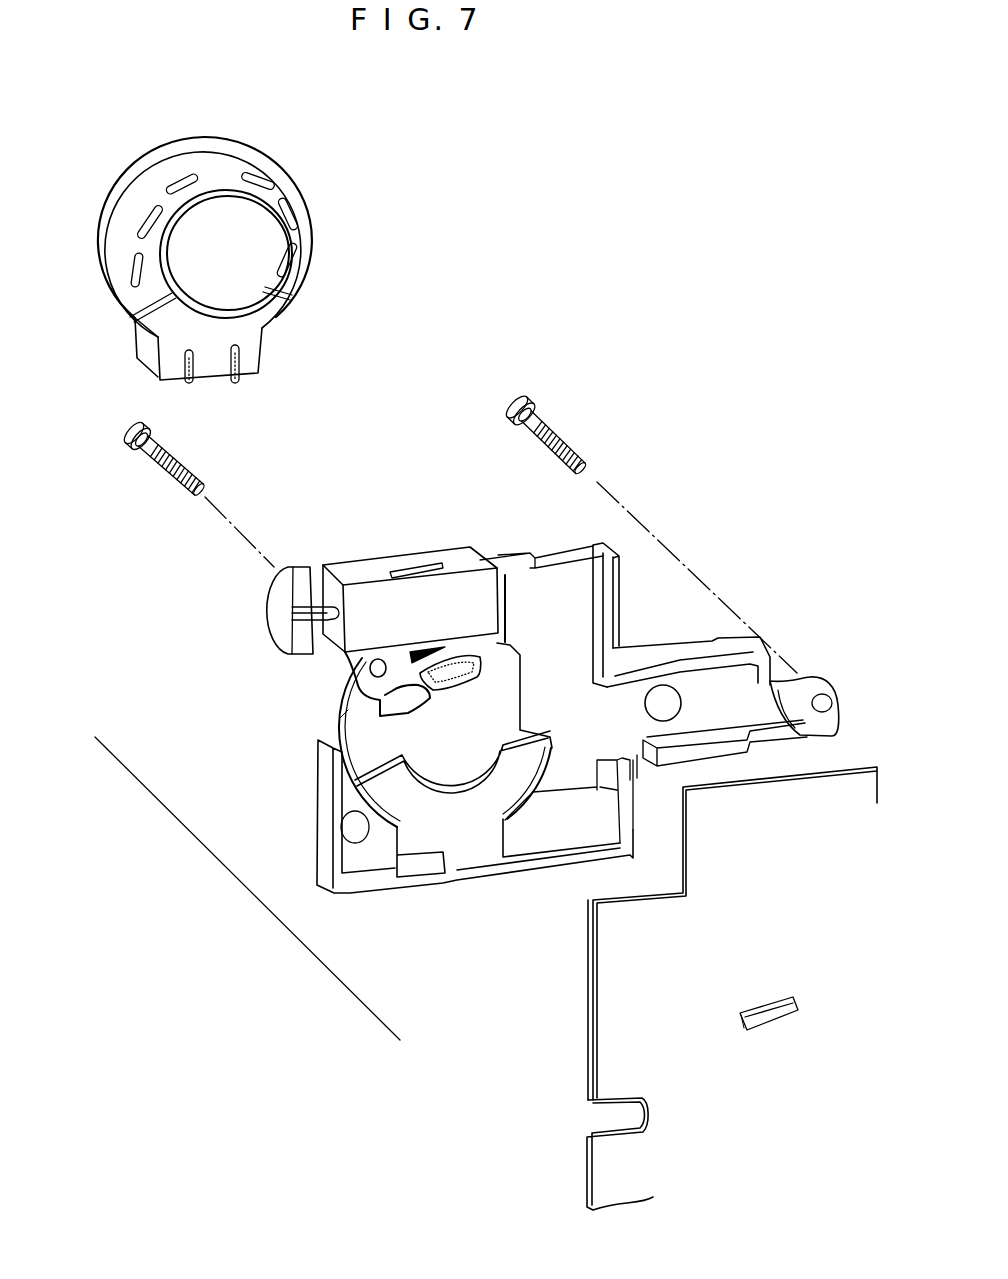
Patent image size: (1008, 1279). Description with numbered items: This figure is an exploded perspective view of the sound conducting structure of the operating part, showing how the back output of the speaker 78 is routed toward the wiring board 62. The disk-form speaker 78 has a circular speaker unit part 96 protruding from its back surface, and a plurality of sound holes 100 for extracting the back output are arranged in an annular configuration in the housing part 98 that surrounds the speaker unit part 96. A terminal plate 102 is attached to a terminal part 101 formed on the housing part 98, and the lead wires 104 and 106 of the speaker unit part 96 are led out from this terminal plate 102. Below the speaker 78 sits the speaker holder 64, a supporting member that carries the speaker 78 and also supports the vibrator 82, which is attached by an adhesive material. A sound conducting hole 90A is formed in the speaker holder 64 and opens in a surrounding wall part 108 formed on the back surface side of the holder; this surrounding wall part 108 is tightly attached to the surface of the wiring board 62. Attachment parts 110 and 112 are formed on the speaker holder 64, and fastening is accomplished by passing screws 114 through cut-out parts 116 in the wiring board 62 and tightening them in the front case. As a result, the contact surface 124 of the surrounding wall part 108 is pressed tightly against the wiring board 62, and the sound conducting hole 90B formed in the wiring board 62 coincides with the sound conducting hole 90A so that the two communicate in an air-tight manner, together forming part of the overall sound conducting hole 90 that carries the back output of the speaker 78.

The speaker 78 is at (309, 230).
The speaker unit part 96 is at (214, 190).
The housing part 98 is at (273, 183).
The sound holes 100 is at (170, 186).
The terminal part 101 is at (136, 340).
The terminal plate 102 is at (274, 316).
The lead wire 104 is at (231, 385).
The lead wire 106 is at (186, 384).
The screws 114 is at (130, 421).
The vibrator 82 is at (372, 566).
The contact surface 124 is at (517, 607).
The speaker holder 64 is at (475, 880).
The surrounding wall part 108 is at (320, 845).
The attachment part 112 is at (360, 670).
The sound conducting hole 90A is at (432, 698).
The sound conducting hole 90 is at (268, 910).
The attachment part 110 is at (830, 722).
The wiring board 62 is at (825, 778).
The sound conducting hole 90B is at (747, 1020).
The cut-out parts 116 is at (587, 1125).